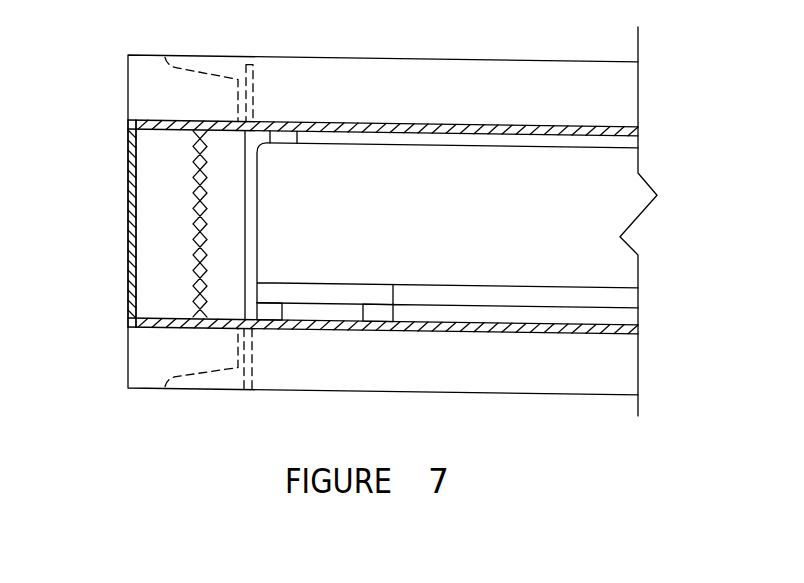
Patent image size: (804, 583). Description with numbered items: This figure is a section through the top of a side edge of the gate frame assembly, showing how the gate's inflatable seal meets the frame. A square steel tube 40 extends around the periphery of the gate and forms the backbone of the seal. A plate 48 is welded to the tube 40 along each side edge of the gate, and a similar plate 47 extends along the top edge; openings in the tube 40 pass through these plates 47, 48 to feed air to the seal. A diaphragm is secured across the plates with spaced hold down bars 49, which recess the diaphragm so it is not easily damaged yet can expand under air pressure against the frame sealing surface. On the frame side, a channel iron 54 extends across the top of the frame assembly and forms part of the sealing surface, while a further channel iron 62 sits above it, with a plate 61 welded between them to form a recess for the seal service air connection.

The square steel tube 40 is at (503, 165).
The plate 47 is at (615, 290).
The plate 48 is at (290, 288).
The hold down bar 49 is at (382, 309).
The channel iron 54 is at (331, 118).
The plate 61 is at (211, 146).
The channel iron 62 is at (127, 199).